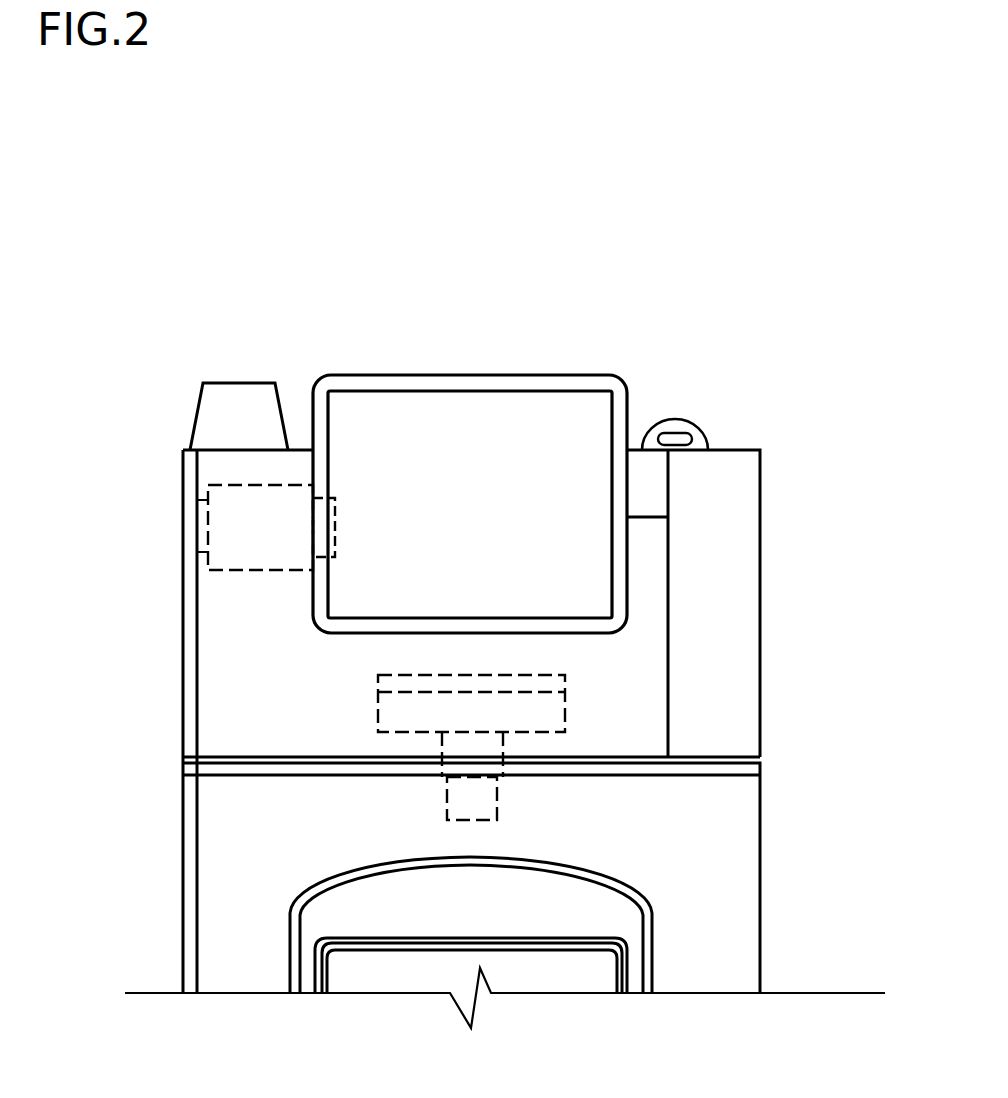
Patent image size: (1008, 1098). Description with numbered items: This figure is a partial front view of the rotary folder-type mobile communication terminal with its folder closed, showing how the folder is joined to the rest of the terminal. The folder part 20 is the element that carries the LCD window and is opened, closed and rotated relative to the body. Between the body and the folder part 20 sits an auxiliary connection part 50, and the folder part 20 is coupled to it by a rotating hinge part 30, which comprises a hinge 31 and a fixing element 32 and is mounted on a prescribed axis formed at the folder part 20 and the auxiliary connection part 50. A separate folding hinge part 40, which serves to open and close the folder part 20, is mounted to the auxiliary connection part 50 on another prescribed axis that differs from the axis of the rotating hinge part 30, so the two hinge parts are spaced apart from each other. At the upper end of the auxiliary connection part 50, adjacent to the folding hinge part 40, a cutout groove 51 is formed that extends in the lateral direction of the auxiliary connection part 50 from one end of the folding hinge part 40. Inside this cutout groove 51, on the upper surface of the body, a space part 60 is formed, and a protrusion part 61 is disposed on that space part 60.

The folder part 20 is at (750, 888).
The rotating hinge part 30 is at (648, 740).
The hinge 31 is at (498, 798).
The fixing element 32 is at (513, 692).
The folding hinge part 40 is at (245, 573).
The auxiliary connection part 50 is at (750, 563).
The cutout groove 51 is at (348, 633).
The space part 60 is at (613, 490).
The protrusion part 61 is at (570, 398).